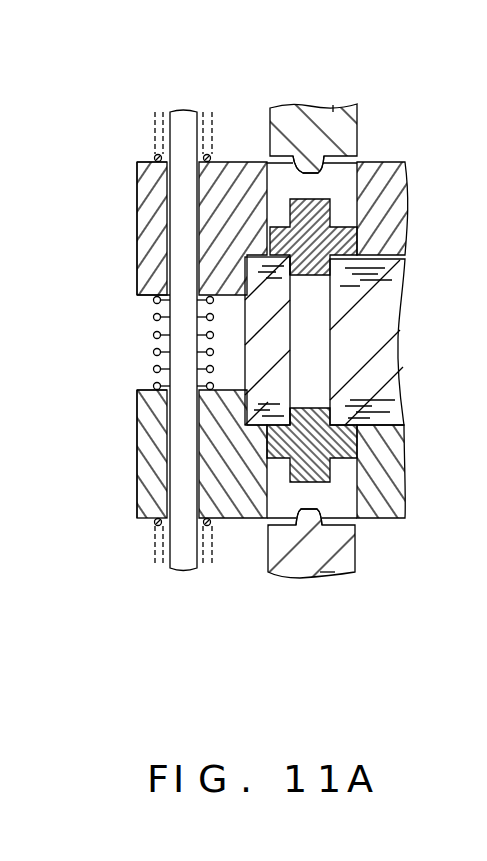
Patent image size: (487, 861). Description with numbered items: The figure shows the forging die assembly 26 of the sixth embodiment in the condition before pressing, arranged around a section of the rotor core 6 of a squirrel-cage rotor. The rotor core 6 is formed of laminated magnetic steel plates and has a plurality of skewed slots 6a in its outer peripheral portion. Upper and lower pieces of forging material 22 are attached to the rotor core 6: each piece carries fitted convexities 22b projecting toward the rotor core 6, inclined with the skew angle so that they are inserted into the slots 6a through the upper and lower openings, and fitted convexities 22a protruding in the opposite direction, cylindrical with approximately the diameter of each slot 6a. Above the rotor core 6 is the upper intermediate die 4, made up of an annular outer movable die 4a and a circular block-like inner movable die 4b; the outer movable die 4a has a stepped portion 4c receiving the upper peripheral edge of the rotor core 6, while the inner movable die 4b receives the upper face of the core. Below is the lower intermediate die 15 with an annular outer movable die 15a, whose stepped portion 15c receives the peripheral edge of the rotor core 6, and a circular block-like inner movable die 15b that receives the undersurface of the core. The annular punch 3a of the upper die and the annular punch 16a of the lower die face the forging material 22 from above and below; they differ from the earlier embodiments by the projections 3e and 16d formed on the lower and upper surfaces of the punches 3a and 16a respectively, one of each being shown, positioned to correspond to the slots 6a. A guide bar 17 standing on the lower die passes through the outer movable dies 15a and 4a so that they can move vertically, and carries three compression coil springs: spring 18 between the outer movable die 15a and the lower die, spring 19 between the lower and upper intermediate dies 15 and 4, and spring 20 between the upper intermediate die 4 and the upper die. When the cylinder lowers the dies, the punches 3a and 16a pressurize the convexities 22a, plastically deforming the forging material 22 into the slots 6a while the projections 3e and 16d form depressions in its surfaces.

The punch 3a is at (358, 120).
The projection 3e is at (267, 178).
The upper intermediate die 4 is at (137, 245).
The outer movable die 4a is at (137, 207).
The inner movable die 4b is at (352, 200).
The stepped portion 4c is at (245, 268).
The rotor core 6 is at (245, 327).
The skewed slot 6a is at (325, 330).
The lower intermediate die 15 is at (137, 463).
The outer movable die 15a is at (137, 497).
The inner movable die 15b is at (360, 488).
The stepped portion 15c is at (245, 403).
The punch 16a is at (357, 562).
The projection 16d is at (266, 500).
The guide bar 17 is at (184, 112).
The compression coil spring 18 is at (153, 524).
The compression coil spring 19 is at (153, 342).
The compression coil spring 20 is at (152, 157).
The forging material 22 is at (326, 280).
The fitted convexity 22a is at (315, 196).
The fitted convexity 22b is at (338, 296).
The forging die assembly 26 is at (131, 184).